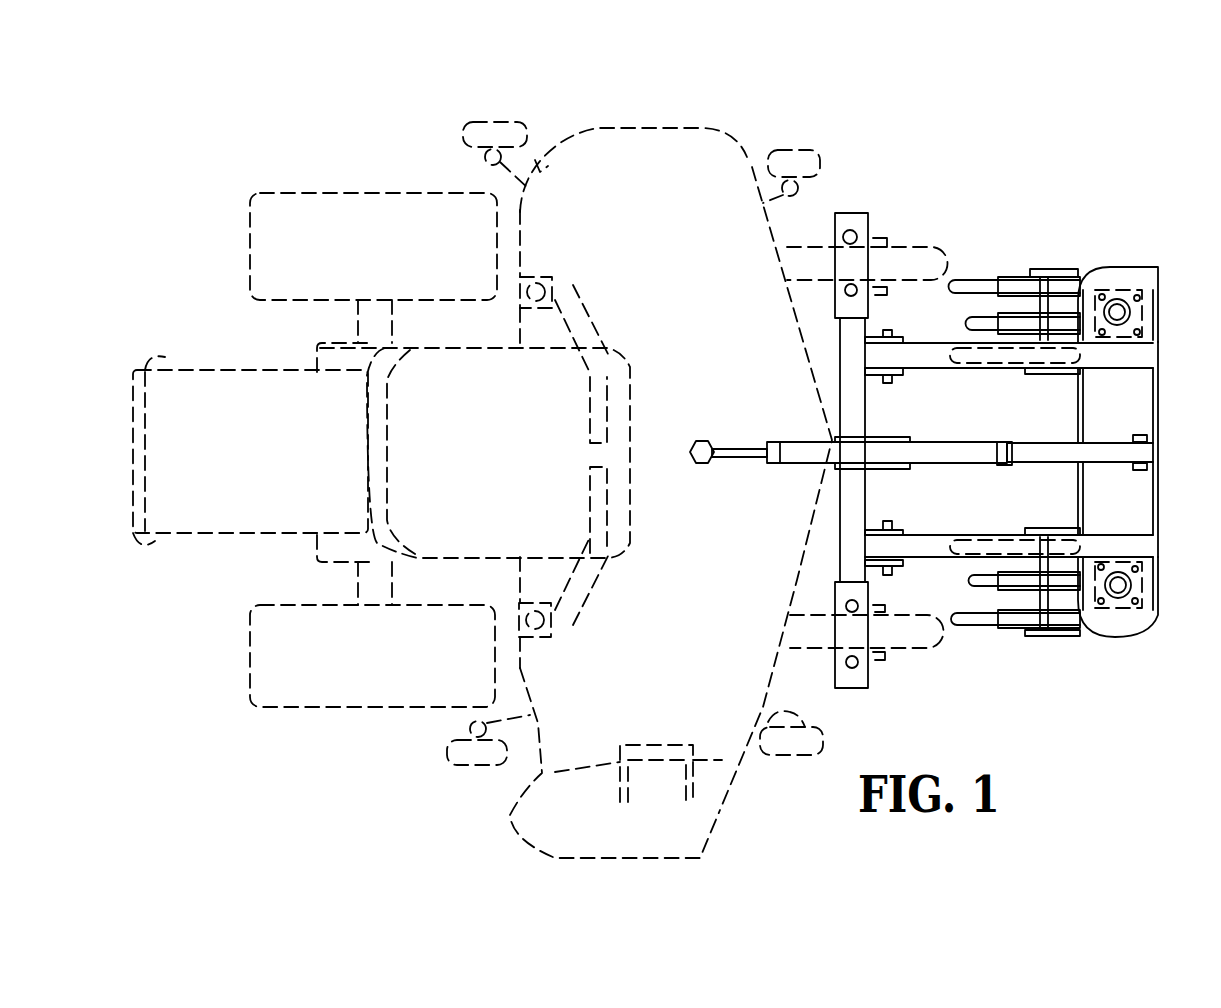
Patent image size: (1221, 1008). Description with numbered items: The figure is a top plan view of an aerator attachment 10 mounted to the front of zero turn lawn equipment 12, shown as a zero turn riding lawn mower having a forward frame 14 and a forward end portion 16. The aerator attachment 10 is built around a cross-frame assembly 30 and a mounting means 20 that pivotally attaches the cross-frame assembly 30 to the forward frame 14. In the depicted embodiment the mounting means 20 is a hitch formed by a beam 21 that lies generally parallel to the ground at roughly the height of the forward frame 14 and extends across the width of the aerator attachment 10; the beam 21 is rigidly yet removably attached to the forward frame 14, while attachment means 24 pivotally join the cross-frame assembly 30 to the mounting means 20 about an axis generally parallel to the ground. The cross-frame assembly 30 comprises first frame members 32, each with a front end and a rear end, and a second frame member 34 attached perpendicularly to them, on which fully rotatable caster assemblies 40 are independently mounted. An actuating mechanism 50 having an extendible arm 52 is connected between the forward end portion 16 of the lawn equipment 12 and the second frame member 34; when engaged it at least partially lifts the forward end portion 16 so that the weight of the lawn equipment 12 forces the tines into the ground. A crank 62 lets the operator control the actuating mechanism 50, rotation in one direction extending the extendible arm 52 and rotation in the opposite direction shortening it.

The aerator attachment 10 is at (950, 413).
The zero turn lawn equipment 12 is at (540, 458).
The forward frame 14 is at (801, 250).
The forward end portion 16 is at (703, 124).
The mounting means 20 is at (853, 235).
The beam 21 is at (870, 490).
The attachment means 24 is at (888, 383).
The cross-frame assembly 30 is at (1140, 410).
The first frame member 32 is at (1130, 372).
The second frame member 34 is at (1148, 415).
The caster assembly 40 is at (1045, 267).
The actuating mechanism 50 is at (820, 431).
The extendible arm 52 is at (1052, 445).
The crank 62 is at (705, 443).